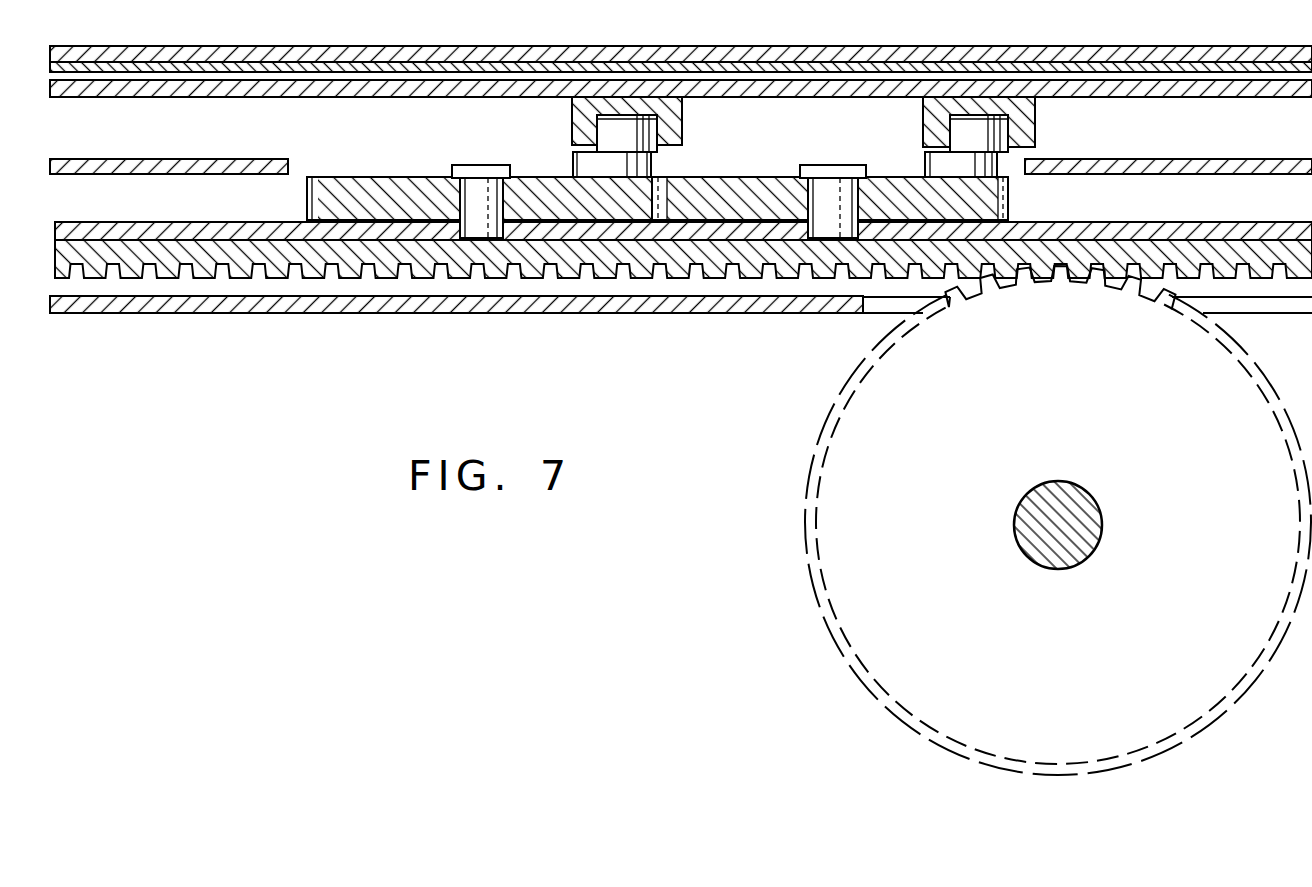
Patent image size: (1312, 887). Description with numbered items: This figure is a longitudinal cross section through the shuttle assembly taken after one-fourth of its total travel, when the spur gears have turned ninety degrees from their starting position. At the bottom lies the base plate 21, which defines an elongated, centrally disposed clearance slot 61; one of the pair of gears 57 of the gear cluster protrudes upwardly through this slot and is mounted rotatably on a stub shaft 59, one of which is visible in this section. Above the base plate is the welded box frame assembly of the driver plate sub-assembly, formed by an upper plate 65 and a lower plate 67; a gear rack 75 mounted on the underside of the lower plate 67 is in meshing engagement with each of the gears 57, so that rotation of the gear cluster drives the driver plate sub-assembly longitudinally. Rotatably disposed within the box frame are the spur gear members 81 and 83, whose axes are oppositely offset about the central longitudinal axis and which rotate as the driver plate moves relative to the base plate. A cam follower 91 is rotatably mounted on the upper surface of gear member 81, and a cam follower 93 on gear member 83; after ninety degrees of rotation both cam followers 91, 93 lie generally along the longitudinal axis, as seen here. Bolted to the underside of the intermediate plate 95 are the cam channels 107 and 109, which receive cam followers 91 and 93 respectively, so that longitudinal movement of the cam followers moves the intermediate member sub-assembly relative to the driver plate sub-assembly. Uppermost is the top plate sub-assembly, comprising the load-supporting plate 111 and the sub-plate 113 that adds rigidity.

The base plate 21 is at (603, 300).
The gear 57 is at (1058, 520).
The stub shaft 59 is at (1099, 468).
The clearance slot 61 is at (897, 303).
The upper plate 65 is at (250, 165).
The lower plate 67 is at (1140, 228).
The gear rack 75 is at (1237, 270).
The spur gear member 81 is at (762, 188).
The spur gear member 83 is at (545, 182).
The cam follower 91 is at (977, 137).
The cam follower 93 is at (613, 132).
The intermediate plate 95 is at (428, 90).
The cam channel 107 is at (1037, 115).
The cam channel 109 is at (682, 115).
The load-supporting plate 111 is at (957, 55).
The sub-plate 113 is at (883, 63).